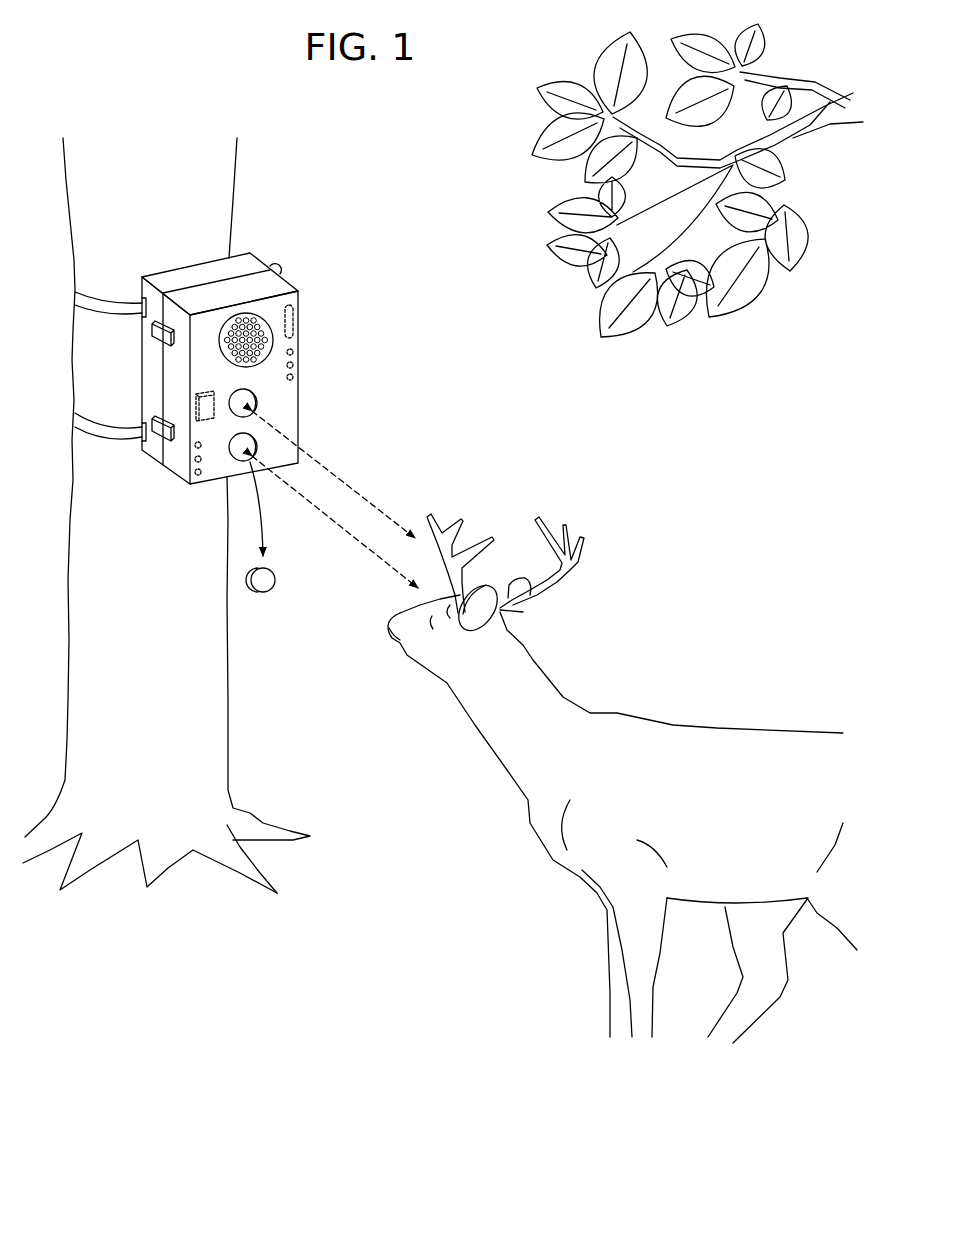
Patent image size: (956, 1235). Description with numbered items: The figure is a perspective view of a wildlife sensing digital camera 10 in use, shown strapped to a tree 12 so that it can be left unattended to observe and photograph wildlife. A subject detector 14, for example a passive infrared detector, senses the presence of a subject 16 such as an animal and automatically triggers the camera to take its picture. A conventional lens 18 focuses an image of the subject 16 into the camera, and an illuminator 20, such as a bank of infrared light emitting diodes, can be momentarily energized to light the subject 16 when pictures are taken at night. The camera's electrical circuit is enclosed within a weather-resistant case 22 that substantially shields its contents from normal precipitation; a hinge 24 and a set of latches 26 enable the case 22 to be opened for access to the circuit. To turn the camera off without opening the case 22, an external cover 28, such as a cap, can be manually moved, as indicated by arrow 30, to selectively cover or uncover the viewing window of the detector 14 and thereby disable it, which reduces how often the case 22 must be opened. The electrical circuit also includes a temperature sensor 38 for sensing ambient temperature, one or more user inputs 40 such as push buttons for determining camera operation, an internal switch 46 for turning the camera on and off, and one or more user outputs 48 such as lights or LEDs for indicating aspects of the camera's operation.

The camera 10 is at (327, 238).
The tree 12 is at (227, 765).
The subject detector 14 is at (233, 458).
The subject 16 is at (630, 713).
The lens 18 is at (257, 405).
The illuminator 20 is at (237, 367).
The weather-resistant case 22 is at (193, 277).
The hinge 24 is at (280, 268).
The latches 26 is at (157, 433).
The external cover 28 is at (267, 583).
The arrow 30 is at (270, 517).
The temperature sensor 38 is at (297, 325).
The user inputs 40 is at (198, 464).
The internal switch 46 is at (197, 412).
The user outputs 48 is at (300, 360).